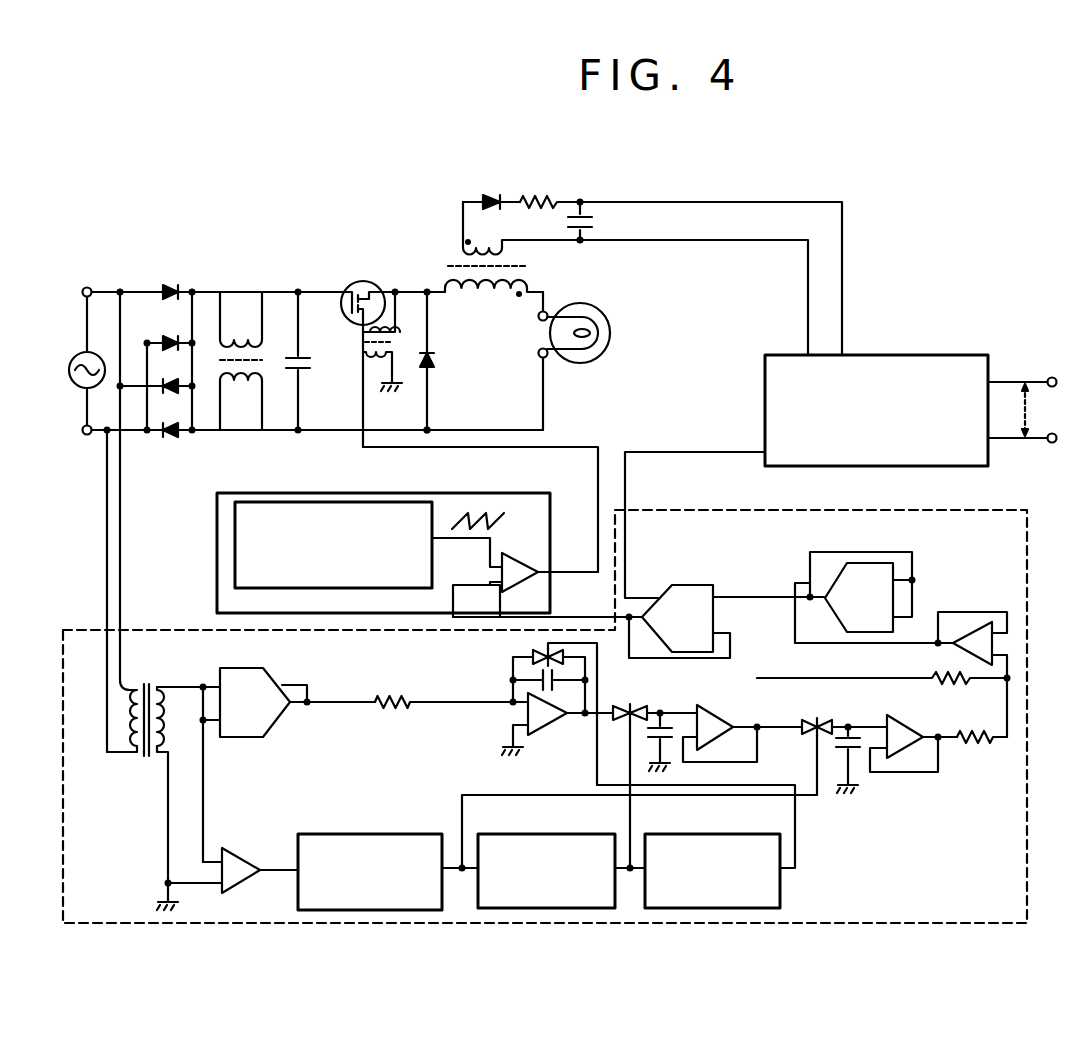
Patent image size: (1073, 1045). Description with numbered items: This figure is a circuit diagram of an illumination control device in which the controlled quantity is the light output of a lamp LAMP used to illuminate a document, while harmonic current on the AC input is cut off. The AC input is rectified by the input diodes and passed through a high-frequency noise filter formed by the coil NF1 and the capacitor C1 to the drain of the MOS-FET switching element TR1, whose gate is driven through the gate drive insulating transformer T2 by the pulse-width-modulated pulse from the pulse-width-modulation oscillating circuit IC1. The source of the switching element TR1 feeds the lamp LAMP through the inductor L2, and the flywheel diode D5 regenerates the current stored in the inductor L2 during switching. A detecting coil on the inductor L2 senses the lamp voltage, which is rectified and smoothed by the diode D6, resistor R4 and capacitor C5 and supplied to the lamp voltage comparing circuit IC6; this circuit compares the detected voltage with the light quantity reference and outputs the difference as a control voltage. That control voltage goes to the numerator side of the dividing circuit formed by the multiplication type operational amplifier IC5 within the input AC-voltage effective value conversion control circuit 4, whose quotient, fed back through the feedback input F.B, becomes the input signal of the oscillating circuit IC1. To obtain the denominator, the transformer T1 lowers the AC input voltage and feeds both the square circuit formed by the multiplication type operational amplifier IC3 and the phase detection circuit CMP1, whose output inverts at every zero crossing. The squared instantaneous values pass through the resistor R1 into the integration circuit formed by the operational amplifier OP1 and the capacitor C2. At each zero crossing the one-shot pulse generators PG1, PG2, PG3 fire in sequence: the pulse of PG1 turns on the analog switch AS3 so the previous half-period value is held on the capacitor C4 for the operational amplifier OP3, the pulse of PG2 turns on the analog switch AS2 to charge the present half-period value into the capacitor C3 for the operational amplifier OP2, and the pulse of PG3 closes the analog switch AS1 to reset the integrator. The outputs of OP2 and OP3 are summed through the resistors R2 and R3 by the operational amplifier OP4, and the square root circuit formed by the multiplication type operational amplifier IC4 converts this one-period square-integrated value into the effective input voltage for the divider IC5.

The coil NF1 is at (240, 342).
The capacitor C1 is at (300, 368).
The switching element TR1 is at (363, 281).
The gate drive insulating transformer T2 is at (363, 341).
The flywheel diode D5 is at (437, 362).
The inductor L2 is at (467, 296).
The diode D6 is at (487, 196).
The resistor R4 is at (541, 196).
The capacitor C5 is at (585, 214).
The lamp LAMP is at (591, 304).
The lamp voltage comparing circuit IC6 is at (908, 355).
The PWM oscillating circuit IC1 is at (368, 539).
The feedback block F.B is at (476, 601).
The input AC-voltage effective value conversion control circuit 4 is at (623, 511).
The multiplication type operational amplifier IC5 is at (672, 587).
The multiplication type operational amplifier IC4 is at (847, 566).
The operational amplifier OP4 is at (975, 622).
The resistor R2 is at (936, 676).
The multiplication type operational amplifier IC3 is at (220, 672).
The resistor R1 is at (389, 694).
The transformer T1 is at (155, 781).
The phase detection circuit CMP1 is at (233, 848).
The one-shot pulse generator PG1 is at (374, 834).
The one-shot pulse generator PG2 is at (557, 834).
The one-shot pulse generator PG3 is at (727, 834).
The analog switch AS1 is at (533, 652).
The capacitor C2 is at (540, 682).
The operational amplifier OP1 is at (560, 726).
The analog switch device AS2 is at (630, 706).
The capacitor C3 is at (665, 726).
The operational amplifier OP2 is at (712, 706).
The analog switch device AS3 is at (818, 720).
The capacitor C4 is at (850, 734).
The operational amplifier OP3 is at (918, 730).
The resistor R3 is at (969, 748).